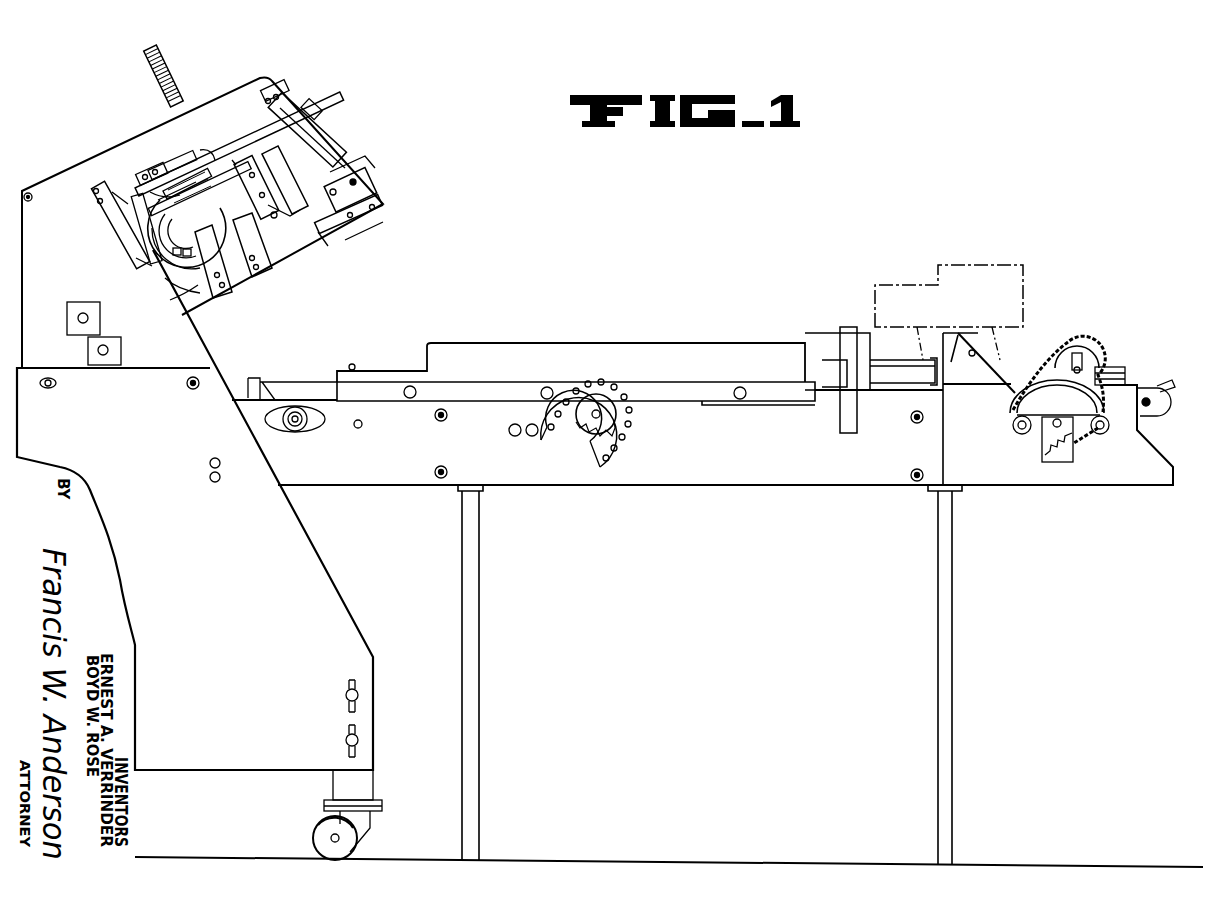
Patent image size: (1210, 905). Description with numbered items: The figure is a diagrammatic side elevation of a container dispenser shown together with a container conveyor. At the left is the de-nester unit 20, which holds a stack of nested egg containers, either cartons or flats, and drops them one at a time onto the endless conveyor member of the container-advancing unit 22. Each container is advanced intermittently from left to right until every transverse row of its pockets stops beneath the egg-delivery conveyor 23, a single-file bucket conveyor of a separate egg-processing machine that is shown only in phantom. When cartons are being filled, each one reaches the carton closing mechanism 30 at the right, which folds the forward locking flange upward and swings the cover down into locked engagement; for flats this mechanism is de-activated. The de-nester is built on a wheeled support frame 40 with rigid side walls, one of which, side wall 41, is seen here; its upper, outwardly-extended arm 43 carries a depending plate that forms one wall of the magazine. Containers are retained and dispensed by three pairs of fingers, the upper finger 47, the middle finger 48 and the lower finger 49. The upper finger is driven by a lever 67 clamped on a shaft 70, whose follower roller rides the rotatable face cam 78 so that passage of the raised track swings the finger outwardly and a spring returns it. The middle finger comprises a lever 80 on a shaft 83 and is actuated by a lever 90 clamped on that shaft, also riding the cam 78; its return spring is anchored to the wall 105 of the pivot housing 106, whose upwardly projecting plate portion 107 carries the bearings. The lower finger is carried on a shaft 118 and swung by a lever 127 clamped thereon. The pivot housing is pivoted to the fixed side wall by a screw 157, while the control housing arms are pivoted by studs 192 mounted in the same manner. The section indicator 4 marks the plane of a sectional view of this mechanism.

The de-nester unit 20 is at (335, 104).
The container-advancing unit 22 is at (484, 336).
The egg-delivery conveyor 23 is at (986, 262).
The carton closing mechanism 30 is at (1099, 342).
The wheeled support frame 40 is at (218, 624).
The side wall 41 is at (60, 252).
The upper outwardly-extended arm 43 is at (225, 92).
The upper finger 47 is at (322, 138).
The middle finger 48 is at (315, 214).
The lower finger 49 is at (302, 242).
The lever 67 is at (137, 235).
The shaft 70 is at (210, 150).
The rotatable face cam 78 is at (180, 272).
The lever 80 is at (258, 174).
The shaft 83 is at (165, 168).
The lever 90 is at (135, 183).
The wall 105 is at (195, 298).
The pivot housing 106 is at (247, 282).
The upwardly projecting plate portion 107 is at (270, 262).
The shaft 118 is at (236, 150).
The lever 127 is at (197, 172).
The screw 157 is at (108, 350).
The stud 192 is at (88, 318).
The section line 4- 4 is at (370, 143).